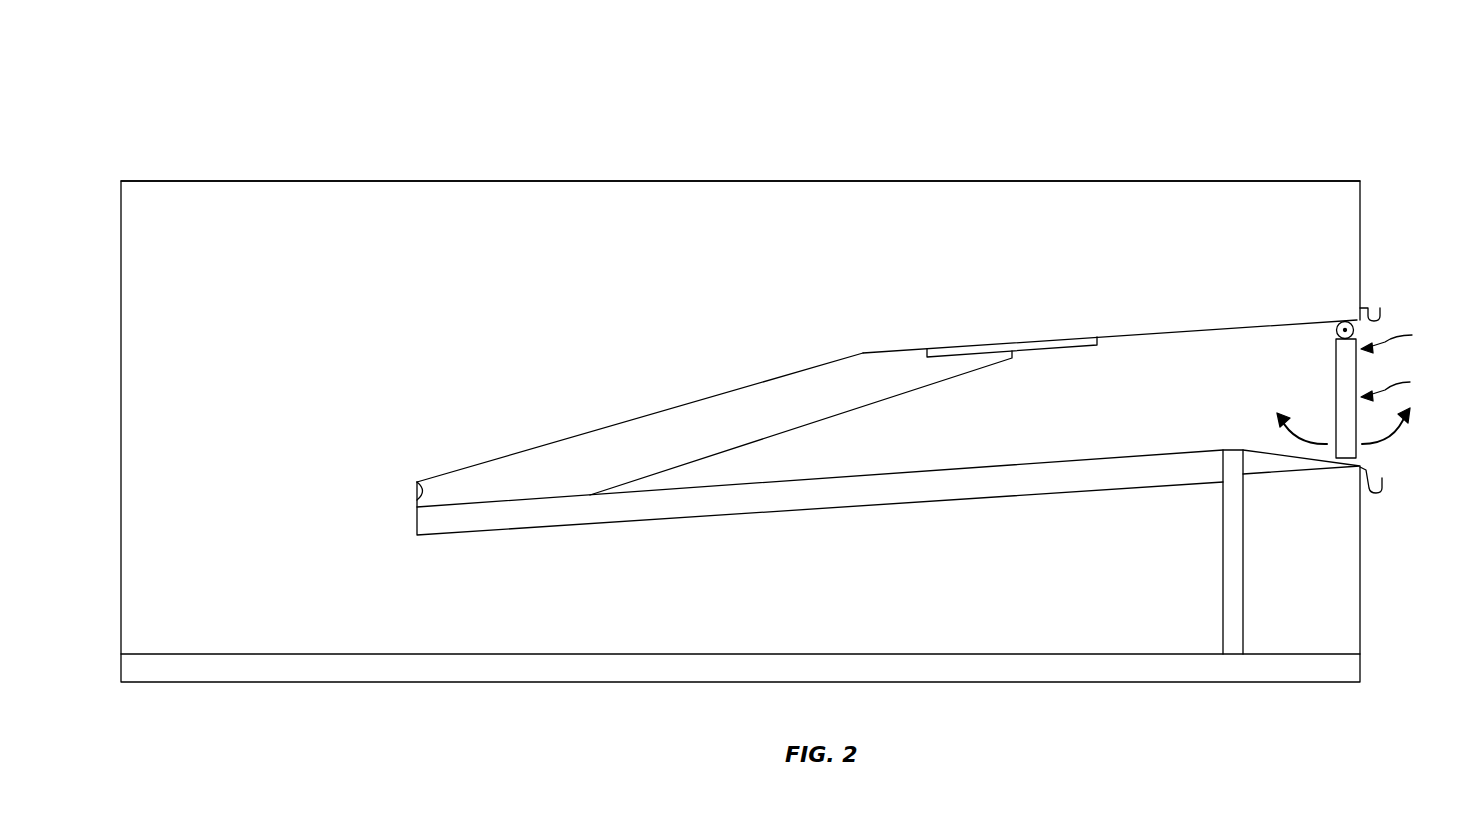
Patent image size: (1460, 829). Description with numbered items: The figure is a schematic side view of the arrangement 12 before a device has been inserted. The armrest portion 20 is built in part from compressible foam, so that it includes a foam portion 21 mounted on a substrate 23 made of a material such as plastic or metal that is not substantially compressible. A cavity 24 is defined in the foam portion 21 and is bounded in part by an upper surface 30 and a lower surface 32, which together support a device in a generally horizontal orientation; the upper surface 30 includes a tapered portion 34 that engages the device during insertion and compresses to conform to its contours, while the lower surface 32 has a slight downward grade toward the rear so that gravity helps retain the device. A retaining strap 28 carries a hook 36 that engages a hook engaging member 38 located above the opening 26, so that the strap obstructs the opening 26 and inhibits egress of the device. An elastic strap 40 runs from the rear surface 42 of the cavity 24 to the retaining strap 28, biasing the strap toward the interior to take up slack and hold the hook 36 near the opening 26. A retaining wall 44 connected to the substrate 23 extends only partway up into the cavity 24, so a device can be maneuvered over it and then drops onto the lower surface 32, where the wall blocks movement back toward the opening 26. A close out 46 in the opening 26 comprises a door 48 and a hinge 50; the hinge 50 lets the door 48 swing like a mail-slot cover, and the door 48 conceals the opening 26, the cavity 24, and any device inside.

The arrangement 12 is at (1166, 65).
The armrest portion 20 is at (270, 180).
The foam portion 21 is at (467, 222).
The substrate 23 is at (1142, 668).
The cavity 24 is at (1177, 382).
The opening 26 is at (1401, 338).
The retaining strap 28 is at (1128, 450).
The upper surface 30 is at (1134, 338).
The lower surface 32 is at (1028, 490).
The tapered portion 34 is at (694, 405).
The hook 36 is at (1372, 494).
The hook engaging member 38 is at (1372, 307).
The elastic strap 40 is at (538, 495).
The rear surface 42 is at (421, 488).
The retaining wall 44 is at (1247, 525).
The close out 46 is at (1400, 384).
The door 48 is at (1340, 378).
The hinge 50 is at (1335, 334).